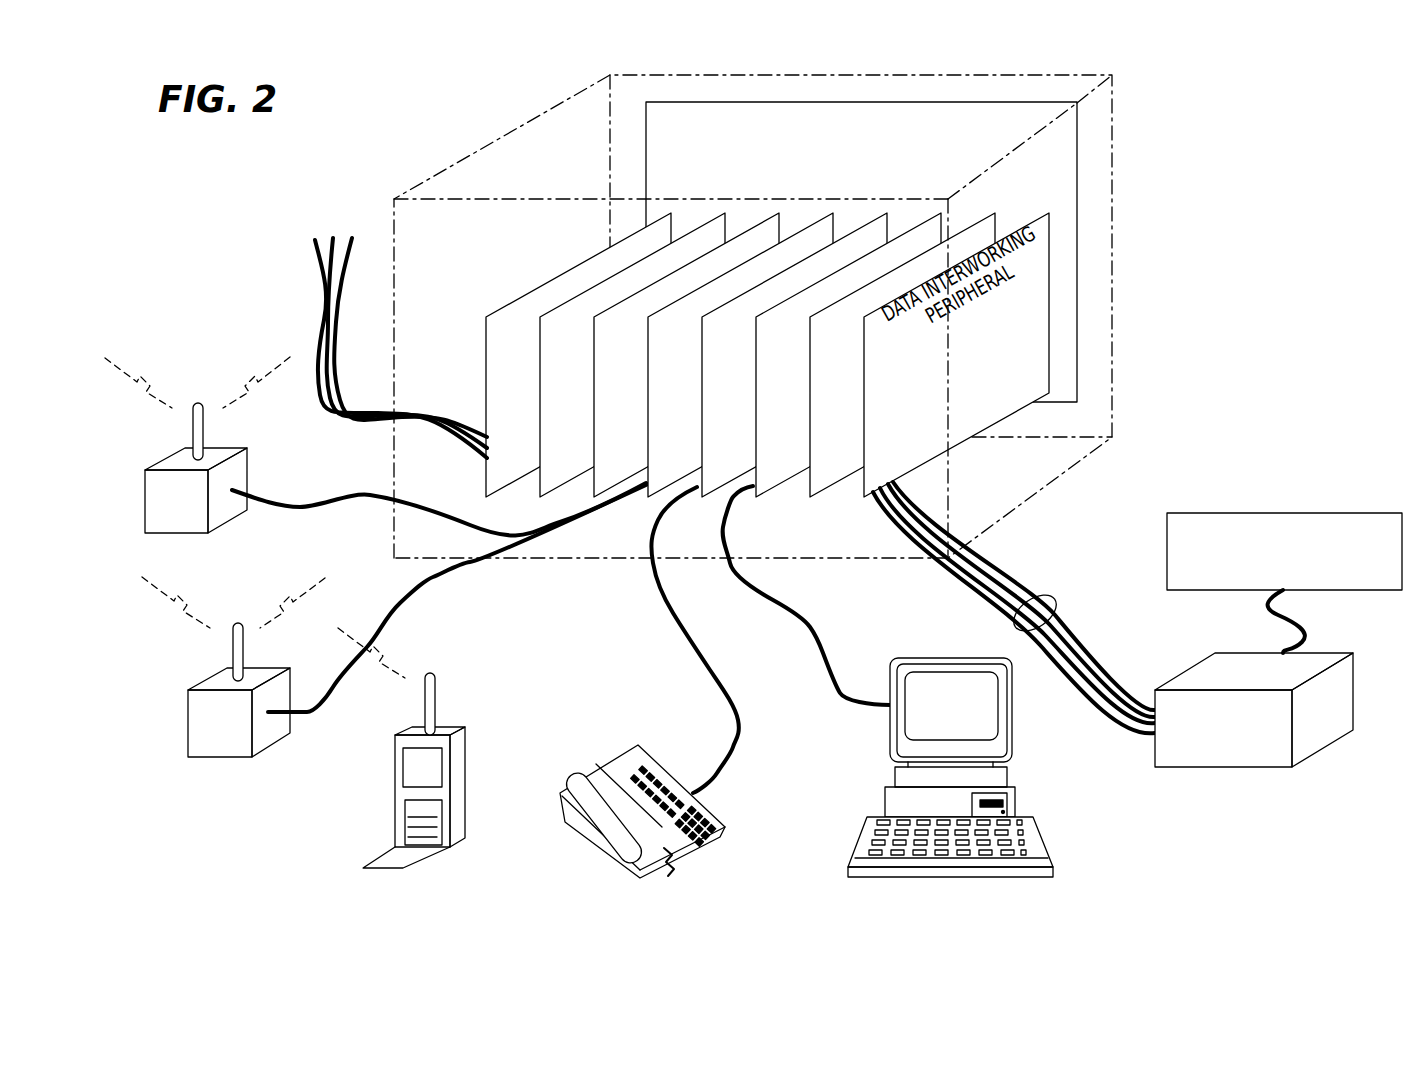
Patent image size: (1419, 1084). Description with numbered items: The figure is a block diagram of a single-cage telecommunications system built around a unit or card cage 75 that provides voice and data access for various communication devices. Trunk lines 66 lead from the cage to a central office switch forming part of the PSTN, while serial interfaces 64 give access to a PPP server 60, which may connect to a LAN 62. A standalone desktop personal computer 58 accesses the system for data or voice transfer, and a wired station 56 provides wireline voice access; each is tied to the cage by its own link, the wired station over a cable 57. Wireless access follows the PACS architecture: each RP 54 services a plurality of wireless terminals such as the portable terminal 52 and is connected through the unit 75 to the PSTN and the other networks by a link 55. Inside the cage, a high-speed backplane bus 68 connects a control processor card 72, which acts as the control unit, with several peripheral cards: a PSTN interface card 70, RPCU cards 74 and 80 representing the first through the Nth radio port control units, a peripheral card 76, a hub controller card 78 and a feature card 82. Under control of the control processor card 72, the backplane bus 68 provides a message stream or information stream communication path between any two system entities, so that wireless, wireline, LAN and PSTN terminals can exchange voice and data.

The portable terminal 52 is at (455, 762).
The RP 54 is at (145, 493).
The radio port link cable 55 is at (362, 497).
The wired station 56 is at (626, 756).
The wired station cable 57 is at (710, 668).
The desktop personal computer 58 is at (1012, 728).
The PPP server 60 is at (1338, 698).
The LAN 62 is at (1323, 513).
The serial interfaces 64 is at (1035, 600).
The trunk lines 66 is at (325, 285).
The backplane bus 68 is at (1077, 242).
The PSTN interface card 70 is at (528, 294).
The control processor card 72 is at (663, 246).
The RPCU card 74 is at (602, 487).
The card cage 75 is at (1112, 115).
The peripheral card 76 is at (650, 483).
The hub controller card 78 is at (717, 489).
The RPCU card 80 is at (777, 484).
The feature card 82 is at (835, 487).